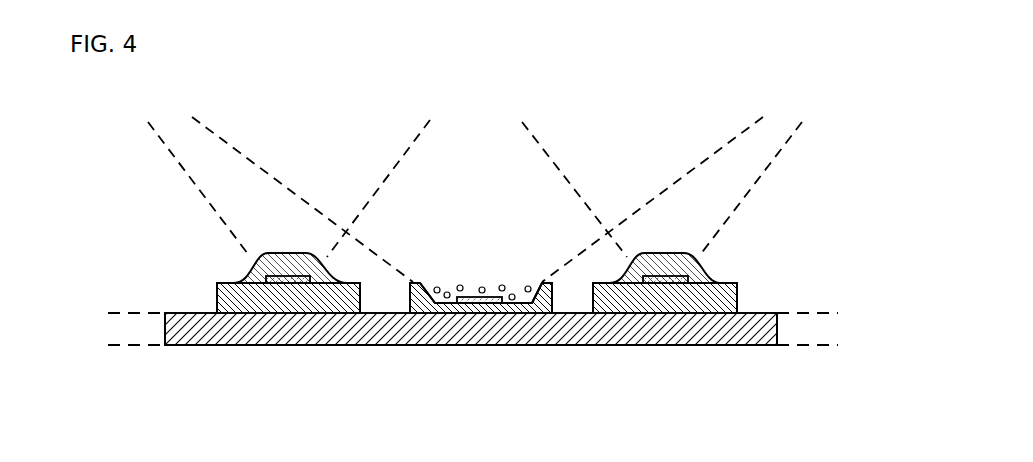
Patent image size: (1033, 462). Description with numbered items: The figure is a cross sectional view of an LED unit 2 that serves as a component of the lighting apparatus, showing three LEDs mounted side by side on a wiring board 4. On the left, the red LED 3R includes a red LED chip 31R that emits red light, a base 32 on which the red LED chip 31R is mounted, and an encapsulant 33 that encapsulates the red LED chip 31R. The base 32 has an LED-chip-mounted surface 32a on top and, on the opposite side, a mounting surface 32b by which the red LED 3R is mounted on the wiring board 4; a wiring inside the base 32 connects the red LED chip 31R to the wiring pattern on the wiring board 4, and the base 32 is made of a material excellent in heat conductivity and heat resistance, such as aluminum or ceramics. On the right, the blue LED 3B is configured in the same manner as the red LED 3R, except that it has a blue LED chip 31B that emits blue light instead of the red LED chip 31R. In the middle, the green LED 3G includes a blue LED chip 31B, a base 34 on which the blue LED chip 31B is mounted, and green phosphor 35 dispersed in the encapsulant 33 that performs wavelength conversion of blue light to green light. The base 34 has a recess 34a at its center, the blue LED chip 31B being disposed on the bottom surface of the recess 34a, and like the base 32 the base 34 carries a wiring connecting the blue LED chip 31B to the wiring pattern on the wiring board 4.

The light emitting device 2 is at (86, 176).
The wiring board 4 is at (200, 330).
The base 32 is at (255, 305).
The LED-chip-mounted surface 32a is at (217, 284).
The mounting surface 32b is at (216, 302).
The encapsulant 33 is at (246, 273).
The red LED chip 31R is at (287, 280).
The blue LED chip 31B is at (475, 295).
The base 34 is at (410, 298).
The recess 34a is at (430, 284).
The green phosphor 35 is at (517, 285).
The red LED 3R is at (309, 319).
The green LED 3G is at (482, 317).
The blue LED 3B is at (668, 317).